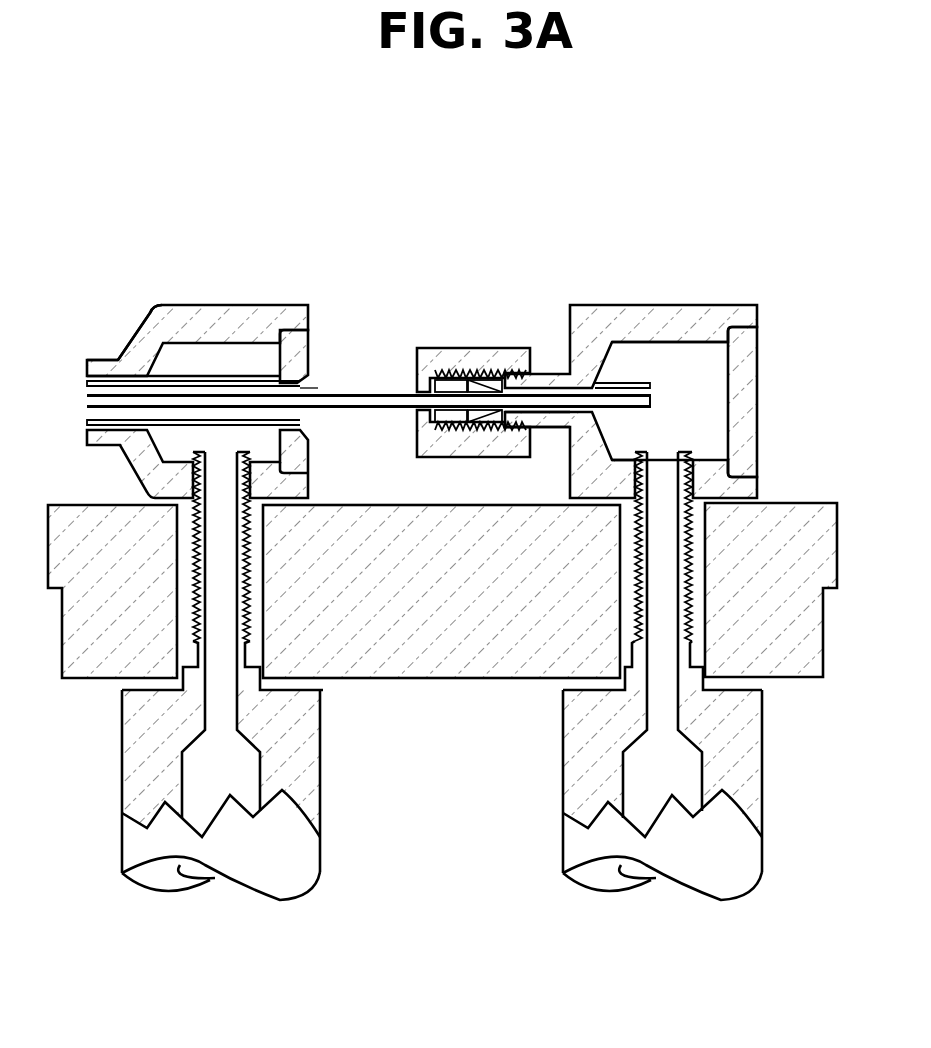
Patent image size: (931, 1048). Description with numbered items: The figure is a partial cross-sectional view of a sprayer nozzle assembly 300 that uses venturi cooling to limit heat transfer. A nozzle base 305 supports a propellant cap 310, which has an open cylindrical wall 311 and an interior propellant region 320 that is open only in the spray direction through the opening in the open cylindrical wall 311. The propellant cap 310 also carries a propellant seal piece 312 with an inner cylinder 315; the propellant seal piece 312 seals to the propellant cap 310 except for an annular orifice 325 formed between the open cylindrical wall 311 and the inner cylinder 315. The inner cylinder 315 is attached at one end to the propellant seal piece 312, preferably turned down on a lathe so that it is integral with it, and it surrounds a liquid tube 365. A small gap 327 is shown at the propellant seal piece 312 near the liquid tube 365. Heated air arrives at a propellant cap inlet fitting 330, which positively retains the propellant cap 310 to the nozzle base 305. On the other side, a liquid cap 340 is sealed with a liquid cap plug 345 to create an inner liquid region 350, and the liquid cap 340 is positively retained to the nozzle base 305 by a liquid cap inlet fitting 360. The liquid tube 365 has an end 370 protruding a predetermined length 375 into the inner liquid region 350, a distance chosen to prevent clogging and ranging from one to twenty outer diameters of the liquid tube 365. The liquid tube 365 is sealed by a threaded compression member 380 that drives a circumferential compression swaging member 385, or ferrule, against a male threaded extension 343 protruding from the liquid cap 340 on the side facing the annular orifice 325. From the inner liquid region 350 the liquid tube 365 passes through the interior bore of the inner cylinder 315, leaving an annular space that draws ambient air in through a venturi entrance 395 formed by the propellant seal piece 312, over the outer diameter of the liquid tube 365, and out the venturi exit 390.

The nozzle assembly 300 is at (180, 185).
The nozzle base 305 is at (437, 680).
The propellant cap 310 is at (193, 305).
The open cylindrical wall 311 is at (121, 376).
The propellant seal piece 312 is at (312, 335).
The inner cylinder 315 is at (227, 378).
The interior propellant region 320 is at (150, 305).
The annular orifice 325 is at (83, 380).
The gap 327 is at (318, 390).
The propellant cap inlet fitting 330 is at (322, 812).
The liquid cap 340 is at (632, 305).
The male threaded extension 343 is at (541, 428).
The liquid cap plug 345 is at (758, 397).
The inner liquid region 350 is at (662, 427).
The liquid cap inlet fitting 360 is at (763, 768).
The liquid tube 365 is at (396, 392).
The end 370 is at (653, 402).
The length 375 is at (621, 380).
The threaded compression member 380 is at (443, 347).
The circumferential compression swaging member 385 is at (490, 347).
The venturi exit 390 is at (85, 424).
The venturi entrance 395 is at (300, 417).